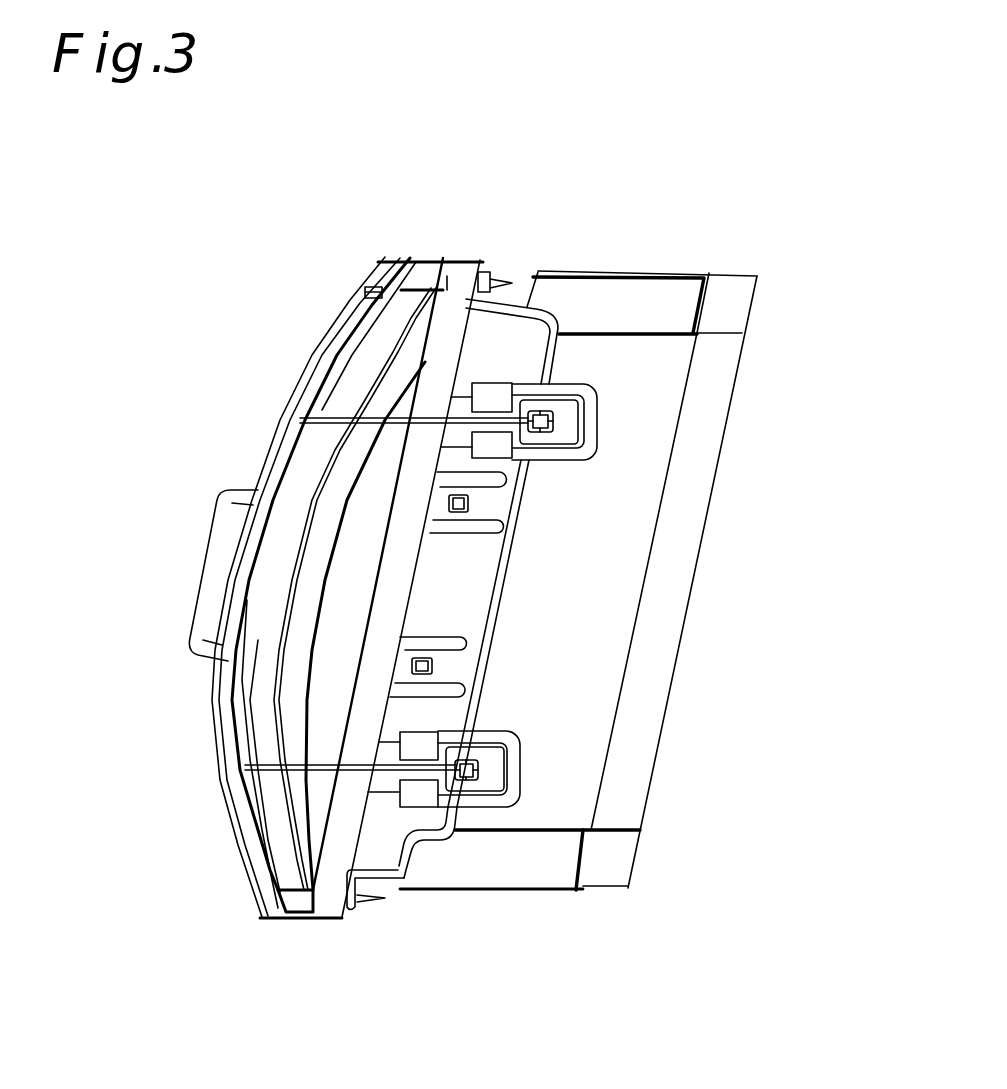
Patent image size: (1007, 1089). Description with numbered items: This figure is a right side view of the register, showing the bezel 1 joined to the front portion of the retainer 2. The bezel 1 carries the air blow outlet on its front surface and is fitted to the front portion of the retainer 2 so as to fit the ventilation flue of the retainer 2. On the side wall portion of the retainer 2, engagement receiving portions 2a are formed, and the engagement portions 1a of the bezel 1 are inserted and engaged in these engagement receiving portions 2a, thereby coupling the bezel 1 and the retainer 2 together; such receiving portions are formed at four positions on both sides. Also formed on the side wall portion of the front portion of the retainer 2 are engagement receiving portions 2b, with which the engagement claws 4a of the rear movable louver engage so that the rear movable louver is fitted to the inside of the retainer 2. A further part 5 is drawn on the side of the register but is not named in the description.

The bezel 1 is at (297, 427).
The engagement portion 1a is at (553, 414).
The retainer 2 is at (682, 595).
The engagement receiving portion 2a is at (597, 423).
The engagement receiving portion 2b is at (461, 494).
The engagement claw 4a is at (462, 513).
The mounting tab 5 is at (212, 560).